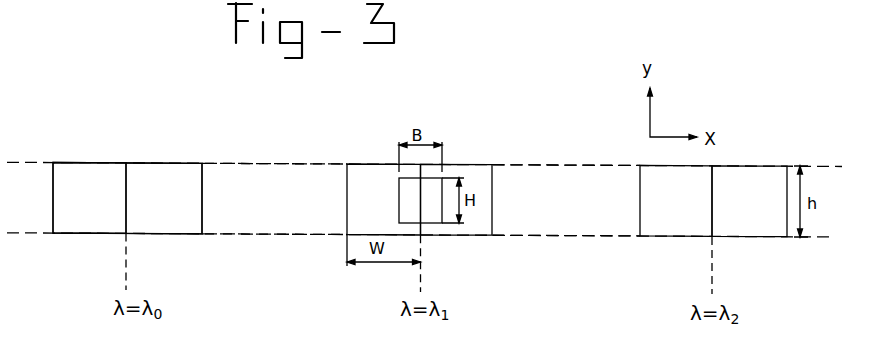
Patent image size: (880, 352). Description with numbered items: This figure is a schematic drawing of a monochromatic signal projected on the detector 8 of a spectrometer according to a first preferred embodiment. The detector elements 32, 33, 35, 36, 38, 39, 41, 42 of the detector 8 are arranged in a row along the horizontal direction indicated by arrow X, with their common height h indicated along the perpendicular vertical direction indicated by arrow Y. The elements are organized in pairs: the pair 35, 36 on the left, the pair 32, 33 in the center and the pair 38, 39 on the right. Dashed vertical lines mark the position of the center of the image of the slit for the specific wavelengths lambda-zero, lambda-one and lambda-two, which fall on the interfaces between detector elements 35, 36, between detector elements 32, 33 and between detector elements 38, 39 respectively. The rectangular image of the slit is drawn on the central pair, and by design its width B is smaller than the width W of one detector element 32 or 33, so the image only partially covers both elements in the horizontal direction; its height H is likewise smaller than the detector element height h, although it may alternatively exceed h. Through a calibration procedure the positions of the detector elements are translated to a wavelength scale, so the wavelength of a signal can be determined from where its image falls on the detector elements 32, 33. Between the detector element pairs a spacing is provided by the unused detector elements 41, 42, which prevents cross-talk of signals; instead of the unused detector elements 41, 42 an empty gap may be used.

The detector 8 is at (142, 137).
The detector element 35 is at (78, 223).
The detector element 36 is at (182, 226).
The unused detector element 41 is at (273, 193).
The detector element 32 is at (360, 168).
The detector element 33 is at (477, 165).
The unused detector element 42 is at (558, 198).
The detector element 38 is at (677, 225).
The detector element 39 is at (750, 227).